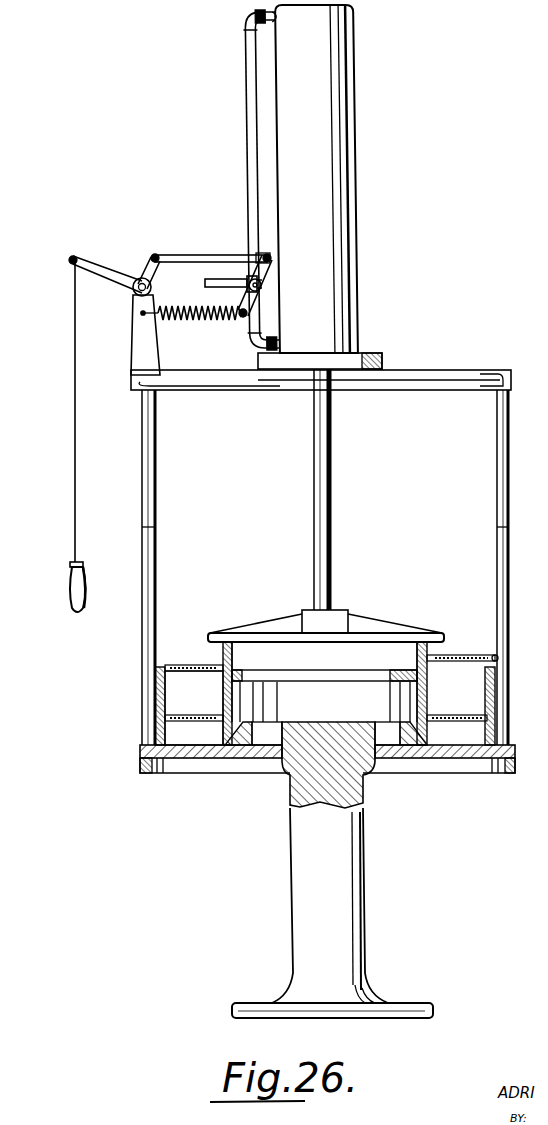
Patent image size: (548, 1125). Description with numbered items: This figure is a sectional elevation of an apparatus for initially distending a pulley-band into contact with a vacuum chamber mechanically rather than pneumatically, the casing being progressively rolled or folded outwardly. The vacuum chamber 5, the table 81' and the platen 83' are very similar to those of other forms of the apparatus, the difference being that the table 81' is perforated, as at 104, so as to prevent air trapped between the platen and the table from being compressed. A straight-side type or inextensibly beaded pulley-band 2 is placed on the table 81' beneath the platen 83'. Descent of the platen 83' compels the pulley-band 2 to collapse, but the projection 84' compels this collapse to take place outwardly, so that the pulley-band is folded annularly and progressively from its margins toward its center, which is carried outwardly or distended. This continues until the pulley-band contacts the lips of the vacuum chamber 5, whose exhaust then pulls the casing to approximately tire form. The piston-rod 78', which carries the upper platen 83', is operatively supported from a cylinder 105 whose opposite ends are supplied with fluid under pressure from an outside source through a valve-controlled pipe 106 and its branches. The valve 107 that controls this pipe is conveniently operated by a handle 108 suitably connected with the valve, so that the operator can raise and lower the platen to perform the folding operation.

The cylinder 105 is at (345, 170).
The valve 107 is at (256, 282).
The valve-controlled pipe 106 is at (205, 283).
The handle 108 is at (72, 590).
The piston-rod 78' is at (304, 489).
The platen 83' is at (326, 612).
The table 81' is at (325, 725).
The projection 84' is at (324, 685).
The vacuum chamber 5 is at (175, 677).
The pulley-band 2 is at (223, 690).
The perforation 104 is at (267, 750).